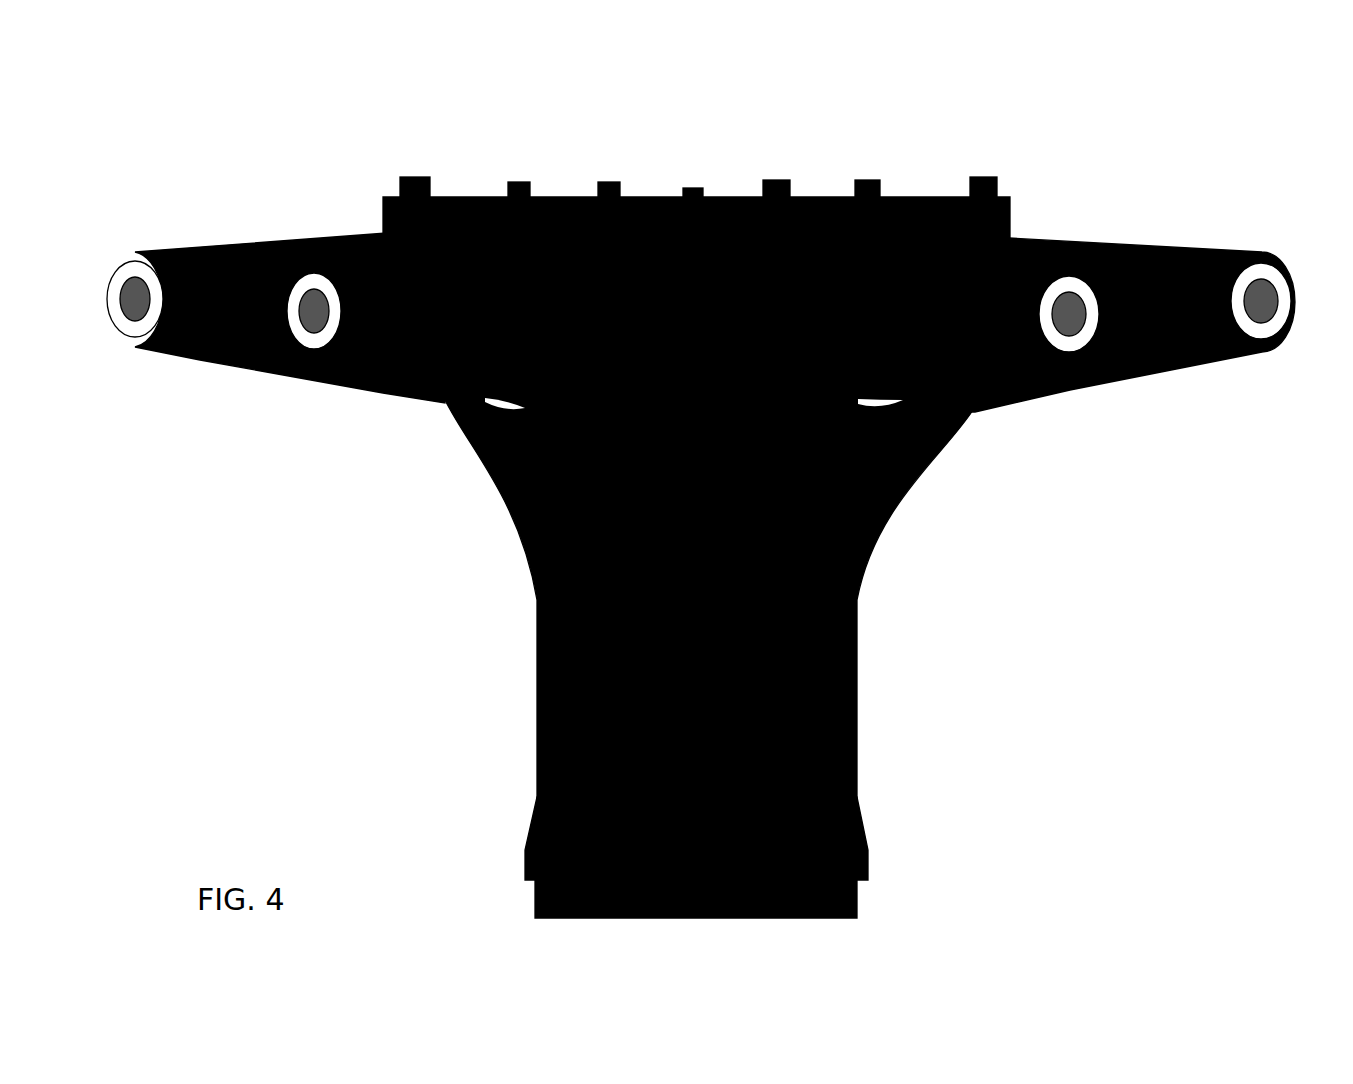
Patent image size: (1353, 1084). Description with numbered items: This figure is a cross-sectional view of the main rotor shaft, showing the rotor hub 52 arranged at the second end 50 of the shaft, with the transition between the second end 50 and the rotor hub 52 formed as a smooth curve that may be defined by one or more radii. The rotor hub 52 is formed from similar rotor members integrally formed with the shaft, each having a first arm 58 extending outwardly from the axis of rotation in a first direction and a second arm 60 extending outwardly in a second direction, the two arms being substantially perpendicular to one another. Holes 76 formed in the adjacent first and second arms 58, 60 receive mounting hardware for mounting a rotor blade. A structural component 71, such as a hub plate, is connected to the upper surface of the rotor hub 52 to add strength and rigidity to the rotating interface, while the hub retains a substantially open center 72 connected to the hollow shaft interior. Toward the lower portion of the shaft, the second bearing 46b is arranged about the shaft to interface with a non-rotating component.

The rotor hub 52 is at (226, 138).
The open center 72 is at (648, 200).
The structural component 71 is at (815, 197).
The second arm 60 is at (1168, 240).
The holes 76 is at (125, 270).
The first arm 58 is at (205, 360).
The second end 50 is at (858, 605).
The second bearing 46b is at (858, 900).